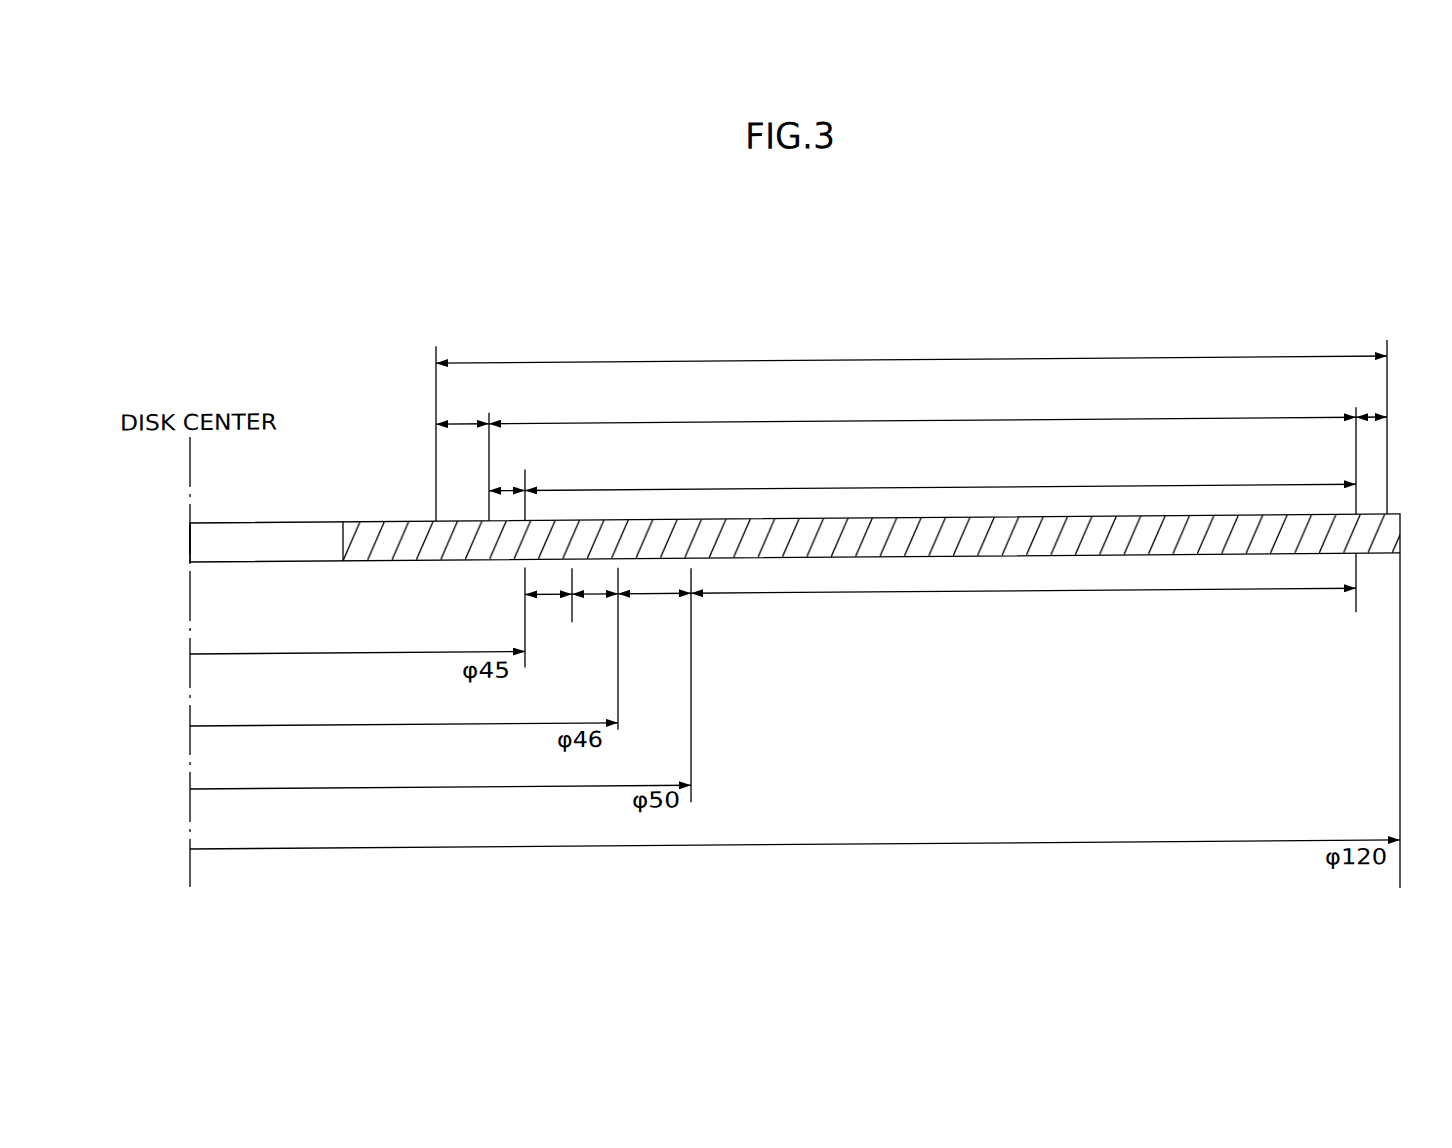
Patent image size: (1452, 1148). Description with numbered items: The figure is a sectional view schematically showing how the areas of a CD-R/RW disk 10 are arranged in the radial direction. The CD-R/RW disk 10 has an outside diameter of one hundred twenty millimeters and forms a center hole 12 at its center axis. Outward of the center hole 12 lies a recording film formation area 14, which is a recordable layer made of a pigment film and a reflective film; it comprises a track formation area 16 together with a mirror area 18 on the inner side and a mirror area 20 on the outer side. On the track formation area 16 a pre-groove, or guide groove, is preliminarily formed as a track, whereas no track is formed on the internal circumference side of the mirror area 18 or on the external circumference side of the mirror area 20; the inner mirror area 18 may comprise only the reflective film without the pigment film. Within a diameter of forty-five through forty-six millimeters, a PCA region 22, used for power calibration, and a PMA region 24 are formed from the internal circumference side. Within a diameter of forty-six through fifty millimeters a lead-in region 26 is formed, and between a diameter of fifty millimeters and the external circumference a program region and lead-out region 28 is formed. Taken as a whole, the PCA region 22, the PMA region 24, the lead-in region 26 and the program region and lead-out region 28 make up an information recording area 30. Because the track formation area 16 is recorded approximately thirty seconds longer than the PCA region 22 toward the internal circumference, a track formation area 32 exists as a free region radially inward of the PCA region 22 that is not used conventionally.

The CD-R/RW disk 10 is at (1040, 262).
The center hole 12 is at (343, 545).
The recording film formation area 14 is at (660, 368).
The track formation area 16 is at (660, 429).
The mirror area 18 is at (460, 426).
The mirror area 20 is at (1372, 424).
The PCA region 22 is at (548, 597).
The PMA region 24 is at (597, 598).
The lead-in region 26 is at (650, 598).
The program region and lead-out region 28 is at (723, 599).
The information recording area 30 is at (660, 496).
The track formation area 32 is at (510, 495).